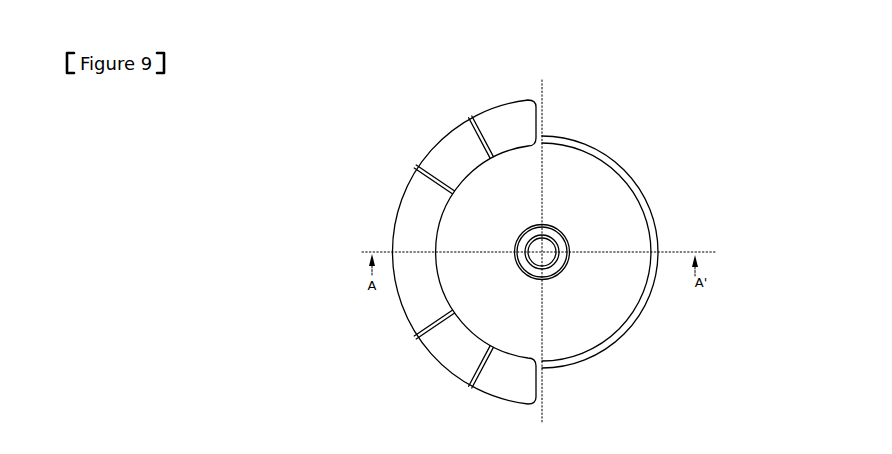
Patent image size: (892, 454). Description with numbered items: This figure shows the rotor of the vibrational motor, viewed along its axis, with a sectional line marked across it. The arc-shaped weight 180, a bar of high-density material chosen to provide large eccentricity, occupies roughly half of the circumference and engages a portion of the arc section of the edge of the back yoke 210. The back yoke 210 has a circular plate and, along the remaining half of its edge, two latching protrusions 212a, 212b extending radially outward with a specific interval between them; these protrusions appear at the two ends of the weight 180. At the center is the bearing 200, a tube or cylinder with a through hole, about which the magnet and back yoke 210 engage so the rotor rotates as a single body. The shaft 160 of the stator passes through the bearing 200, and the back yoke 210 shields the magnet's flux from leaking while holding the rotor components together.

The weight 180 is at (400, 214).
The latching protrusion 212a is at (450, 355).
The latching protrusion 212b is at (450, 150).
The back yoke 210 is at (634, 290).
The bearing 200 is at (561, 227).
The shaft 160 is at (556, 264).